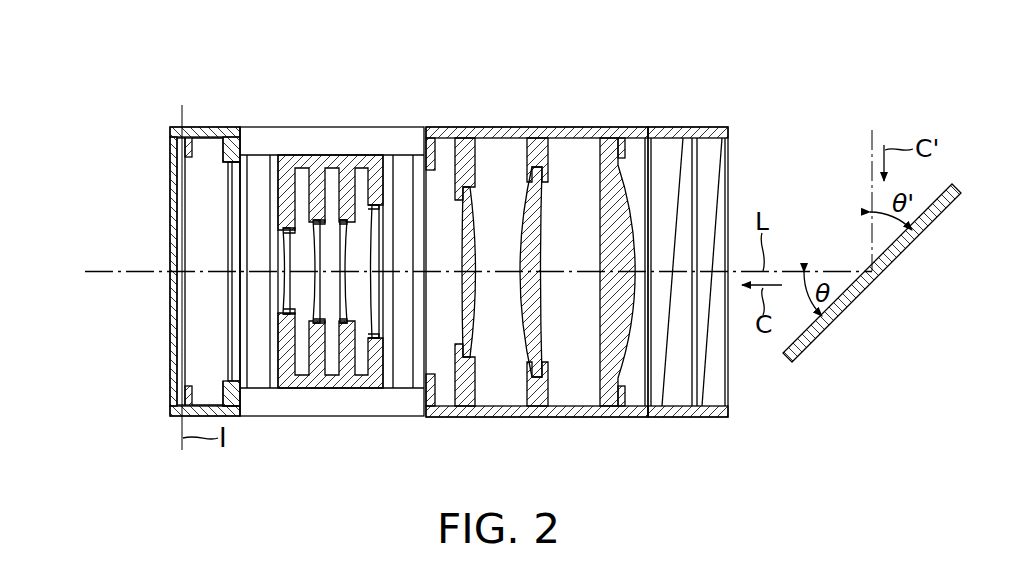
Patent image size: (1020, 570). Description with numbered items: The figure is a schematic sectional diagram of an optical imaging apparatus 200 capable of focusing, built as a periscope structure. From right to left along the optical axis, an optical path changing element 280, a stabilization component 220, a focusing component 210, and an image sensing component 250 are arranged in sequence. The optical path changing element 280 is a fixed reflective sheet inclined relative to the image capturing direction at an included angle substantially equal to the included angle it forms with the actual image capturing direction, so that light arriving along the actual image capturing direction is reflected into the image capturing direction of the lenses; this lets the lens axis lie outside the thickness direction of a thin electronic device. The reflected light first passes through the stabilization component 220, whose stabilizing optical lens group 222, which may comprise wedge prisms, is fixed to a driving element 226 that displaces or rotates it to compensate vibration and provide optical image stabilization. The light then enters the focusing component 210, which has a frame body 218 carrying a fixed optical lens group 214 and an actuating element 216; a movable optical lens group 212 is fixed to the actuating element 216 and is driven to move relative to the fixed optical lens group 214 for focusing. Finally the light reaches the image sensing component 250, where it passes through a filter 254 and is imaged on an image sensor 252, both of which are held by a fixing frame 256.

The optical imaging apparatus capable of focusing 200 is at (780, 96).
The focusing component 210 is at (593, 83).
The movable optical lens group 212 is at (308, 223).
The fixed optical lens group 214 is at (523, 207).
The actuating element 216 is at (372, 137).
The frame body 218 is at (565, 137).
The stabilization component 220 is at (748, 83).
The stabilizing optical lens group 222 is at (680, 177).
The driving element 226 is at (720, 138).
The image sensing component 250 is at (98, 120).
The image sensor 252 is at (180, 180).
The filter 254 is at (237, 220).
The fixing frame 256 is at (178, 135).
The optical path changing element 280 is at (818, 343).